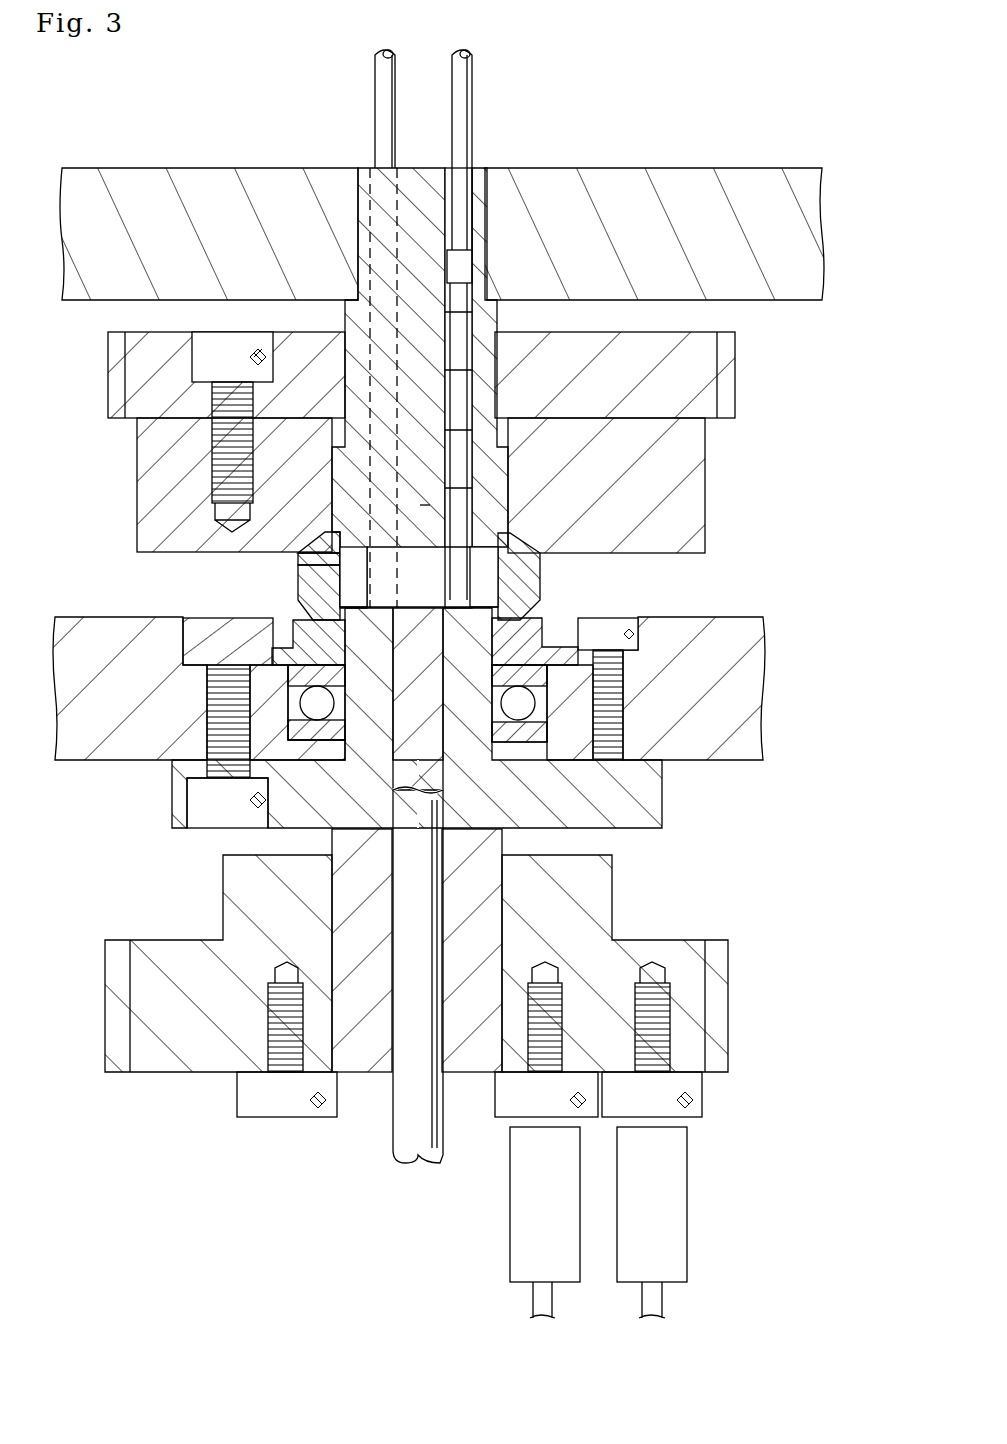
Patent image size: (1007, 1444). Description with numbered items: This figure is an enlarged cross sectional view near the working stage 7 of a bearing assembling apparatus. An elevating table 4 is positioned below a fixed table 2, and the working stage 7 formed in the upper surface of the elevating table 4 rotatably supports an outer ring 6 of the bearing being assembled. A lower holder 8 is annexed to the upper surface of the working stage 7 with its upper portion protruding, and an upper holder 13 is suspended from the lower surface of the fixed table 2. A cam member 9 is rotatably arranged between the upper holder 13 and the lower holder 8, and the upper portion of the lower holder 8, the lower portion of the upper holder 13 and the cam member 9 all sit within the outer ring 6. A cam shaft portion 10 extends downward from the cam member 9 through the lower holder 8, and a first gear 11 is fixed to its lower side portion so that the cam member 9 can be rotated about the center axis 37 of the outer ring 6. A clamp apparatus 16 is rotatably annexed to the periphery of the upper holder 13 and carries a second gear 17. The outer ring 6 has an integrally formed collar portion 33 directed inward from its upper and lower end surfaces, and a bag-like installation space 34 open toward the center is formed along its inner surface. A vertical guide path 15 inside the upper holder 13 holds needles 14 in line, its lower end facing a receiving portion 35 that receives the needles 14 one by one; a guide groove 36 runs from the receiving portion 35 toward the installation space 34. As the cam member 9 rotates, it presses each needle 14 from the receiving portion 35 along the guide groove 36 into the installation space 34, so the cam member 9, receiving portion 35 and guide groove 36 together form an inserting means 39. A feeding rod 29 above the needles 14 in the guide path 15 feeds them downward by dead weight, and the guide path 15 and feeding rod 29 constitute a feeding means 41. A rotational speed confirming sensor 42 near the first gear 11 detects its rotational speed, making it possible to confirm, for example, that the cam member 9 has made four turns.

The fixed table 2 is at (712, 188).
The elevating table 4 is at (740, 690).
The outer ring 6 is at (305, 568).
The working stage 7 is at (333, 622).
The lower holder 8 is at (663, 800).
The cam member 9 is at (510, 538).
The cam shaft portion 10 is at (393, 1132).
The first gear 11 is at (605, 898).
The upper holder 13 is at (478, 185).
The needles 14 is at (468, 283).
The guide path 15 is at (455, 165).
The clamp apparatus 16 is at (135, 463).
The second gear 17 is at (130, 380).
The feeding rod 29 is at (378, 92).
The collar portion 33 is at (345, 533).
The installation space 34 is at (340, 553).
The receiving portion 35 is at (510, 583).
The guide groove 36 is at (480, 605).
The center axis 37 is at (477, 510).
The inserting means 39 is at (595, 565).
The feeding means 41 is at (347, 329).
The rotational speed confirming sensor 42 is at (663, 1225).